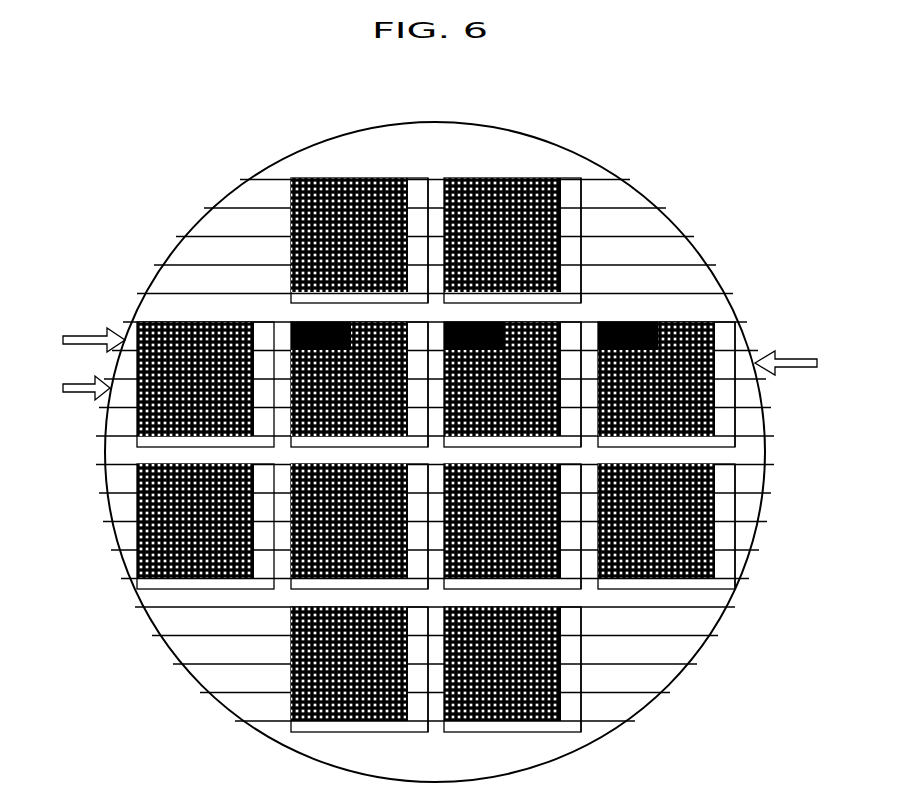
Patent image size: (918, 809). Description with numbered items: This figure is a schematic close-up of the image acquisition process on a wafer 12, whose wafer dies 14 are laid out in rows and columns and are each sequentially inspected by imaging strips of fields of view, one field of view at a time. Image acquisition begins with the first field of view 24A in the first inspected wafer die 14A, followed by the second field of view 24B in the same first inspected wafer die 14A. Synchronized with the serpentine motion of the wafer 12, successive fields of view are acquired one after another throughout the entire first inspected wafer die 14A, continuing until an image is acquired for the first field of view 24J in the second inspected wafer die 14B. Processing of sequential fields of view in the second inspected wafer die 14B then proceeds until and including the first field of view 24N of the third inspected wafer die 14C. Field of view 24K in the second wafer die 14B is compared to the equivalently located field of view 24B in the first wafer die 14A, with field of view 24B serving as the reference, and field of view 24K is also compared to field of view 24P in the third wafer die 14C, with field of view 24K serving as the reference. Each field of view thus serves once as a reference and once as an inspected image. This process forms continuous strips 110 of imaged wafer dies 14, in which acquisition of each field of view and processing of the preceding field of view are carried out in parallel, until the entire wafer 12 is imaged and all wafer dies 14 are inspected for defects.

The wafer 12 is at (766, 506).
The wafer dies 14 is at (414, 186).
The first inspected wafer die 14A is at (433, 305).
The second inspected wafer die 14B is at (574, 321).
The third inspected wafer die 14C is at (738, 322).
The first field of view 24A is at (297, 320).
The second field of view 24B is at (320, 320).
The first field of view 24J is at (462, 321).
The field of view 24K is at (490, 321).
The first field of view 24N is at (613, 321).
The field of view 24P is at (638, 321).
The strips 110 is at (440, 364).